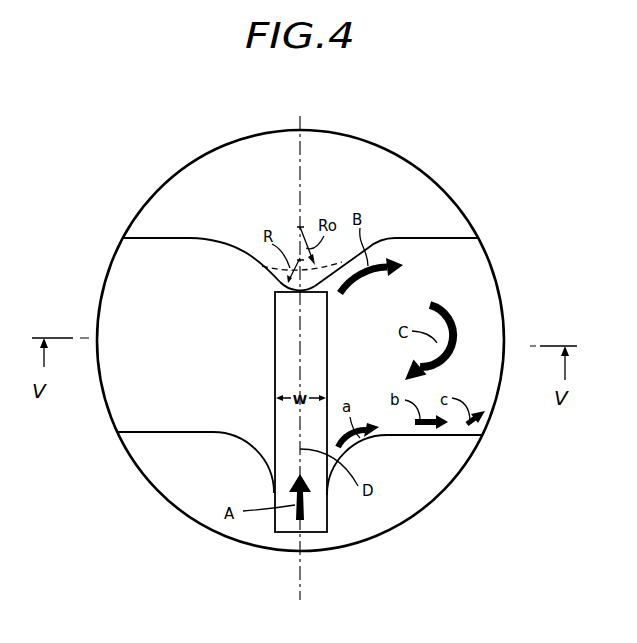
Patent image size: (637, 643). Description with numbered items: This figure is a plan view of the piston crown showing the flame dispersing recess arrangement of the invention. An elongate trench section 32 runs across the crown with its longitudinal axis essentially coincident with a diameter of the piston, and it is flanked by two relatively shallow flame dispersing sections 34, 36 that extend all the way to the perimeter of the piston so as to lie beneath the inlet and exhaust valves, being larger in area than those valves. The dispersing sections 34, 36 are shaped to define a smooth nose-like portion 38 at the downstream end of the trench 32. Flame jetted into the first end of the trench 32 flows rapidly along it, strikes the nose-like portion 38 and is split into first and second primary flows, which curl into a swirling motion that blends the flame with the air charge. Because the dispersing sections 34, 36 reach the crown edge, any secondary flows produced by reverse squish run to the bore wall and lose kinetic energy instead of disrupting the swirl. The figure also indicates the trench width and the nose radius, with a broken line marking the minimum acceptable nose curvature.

The elongate trench section 32 is at (288, 425).
The flame dispersing section 34 is at (193, 256).
The flame dispersing section 36 is at (468, 288).
The nose-like portion 38 is at (286, 283).